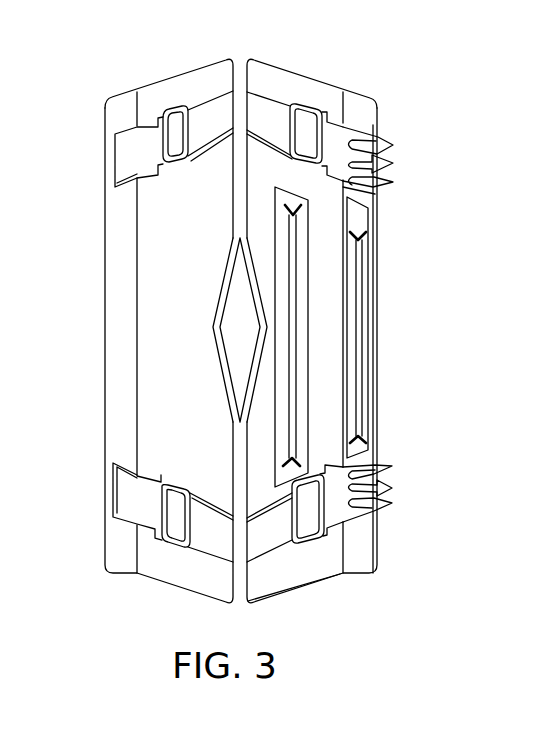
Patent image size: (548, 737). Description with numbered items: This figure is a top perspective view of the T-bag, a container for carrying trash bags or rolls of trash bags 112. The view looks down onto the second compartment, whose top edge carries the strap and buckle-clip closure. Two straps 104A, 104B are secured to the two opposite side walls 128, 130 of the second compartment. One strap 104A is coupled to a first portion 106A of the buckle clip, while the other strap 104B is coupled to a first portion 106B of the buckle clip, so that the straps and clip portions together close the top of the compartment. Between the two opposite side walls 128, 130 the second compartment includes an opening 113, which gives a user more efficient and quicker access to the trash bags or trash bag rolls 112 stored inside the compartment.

The strap 104A is at (215, 128).
The strap 104B is at (277, 128).
The first portion of buckle clip 106A is at (155, 143).
The first portion of buckle clip 106B is at (330, 140).
The rolls of trash bags 112 is at (308, 223).
The opening 113 is at (241, 323).
The side wall 128 is at (165, 423).
The side wall 130 is at (262, 495).